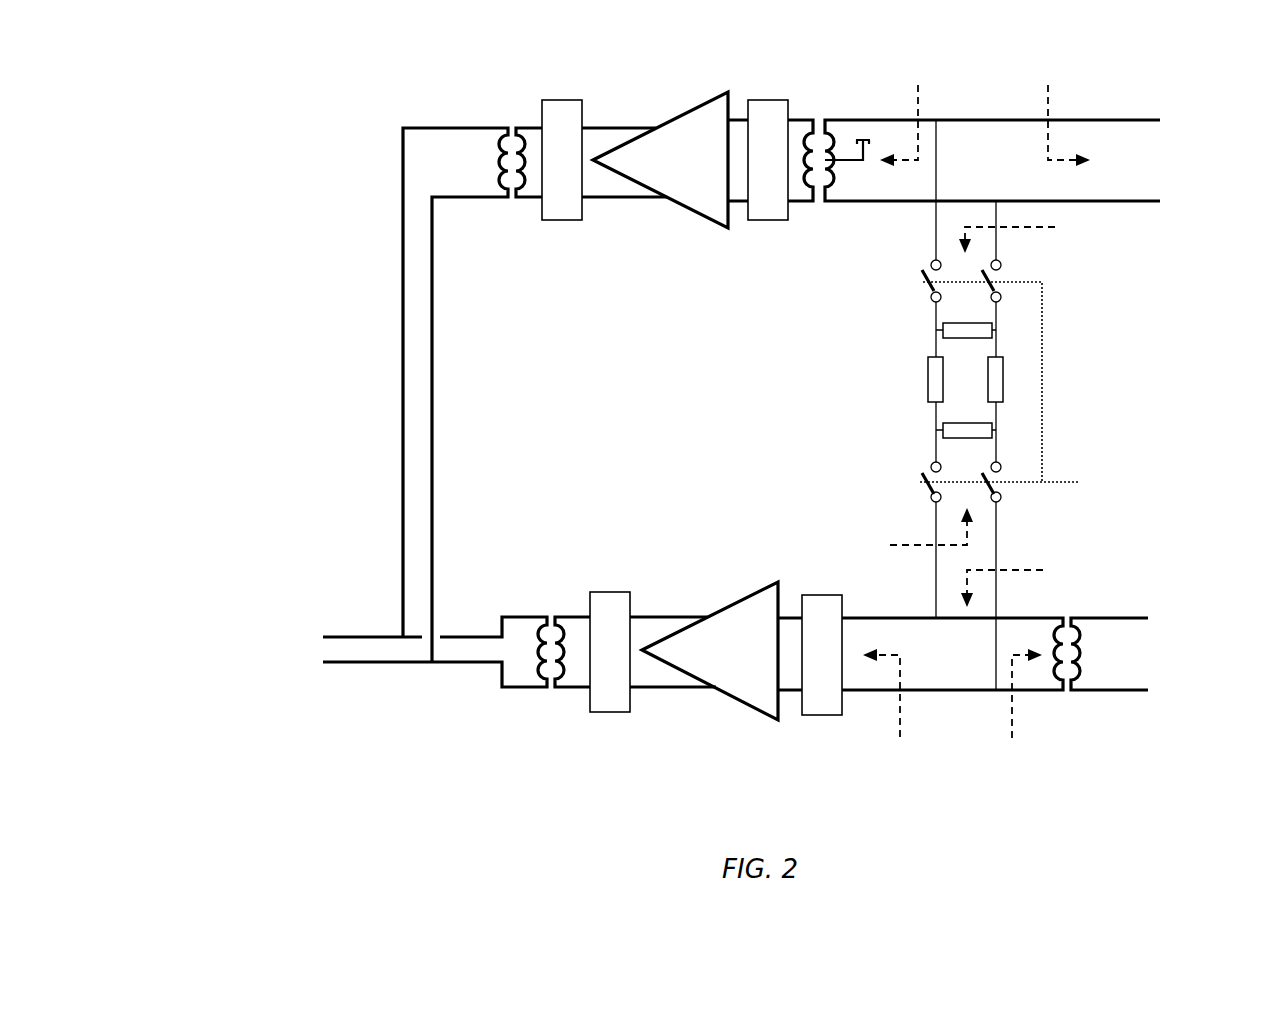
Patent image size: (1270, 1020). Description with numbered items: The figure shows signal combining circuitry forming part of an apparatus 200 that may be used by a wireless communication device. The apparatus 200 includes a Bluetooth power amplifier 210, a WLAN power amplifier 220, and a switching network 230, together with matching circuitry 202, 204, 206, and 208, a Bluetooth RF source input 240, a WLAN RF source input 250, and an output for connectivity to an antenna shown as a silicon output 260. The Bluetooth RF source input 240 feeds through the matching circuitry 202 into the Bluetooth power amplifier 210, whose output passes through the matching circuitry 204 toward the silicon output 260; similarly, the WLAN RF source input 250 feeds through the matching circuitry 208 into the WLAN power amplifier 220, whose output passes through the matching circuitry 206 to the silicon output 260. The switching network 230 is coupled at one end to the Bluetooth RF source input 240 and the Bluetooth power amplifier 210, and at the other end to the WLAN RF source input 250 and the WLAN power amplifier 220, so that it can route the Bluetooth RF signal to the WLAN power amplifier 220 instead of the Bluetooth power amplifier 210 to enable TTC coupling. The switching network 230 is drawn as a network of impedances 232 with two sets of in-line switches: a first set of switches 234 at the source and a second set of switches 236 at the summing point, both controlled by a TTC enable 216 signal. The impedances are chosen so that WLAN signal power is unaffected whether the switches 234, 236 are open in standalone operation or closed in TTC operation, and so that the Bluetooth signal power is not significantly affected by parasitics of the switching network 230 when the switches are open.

The apparatus 200 is at (185, 113).
The matching circuitry 202 is at (806, 80).
The matching circuitry 204 is at (520, 70).
The matching circuitry 206 is at (582, 543).
The matching circuitry 208 is at (815, 547).
The Bluetooth power amplifier 210 is at (660, 160).
The TTC enable signal 216 is at (1027, 395).
The WLAN power amplifier 220 is at (710, 651).
The switching network 230 is at (900, 373).
The impedances 232 is at (985, 425).
The first set of switches 234 is at (908, 284).
The second set of switches 236 is at (898, 460).
The Bluetooth RF source input 240 is at (1022, 161).
The WLAN RF source input 250 is at (1046, 655).
The silicon output 260 is at (384, 407).